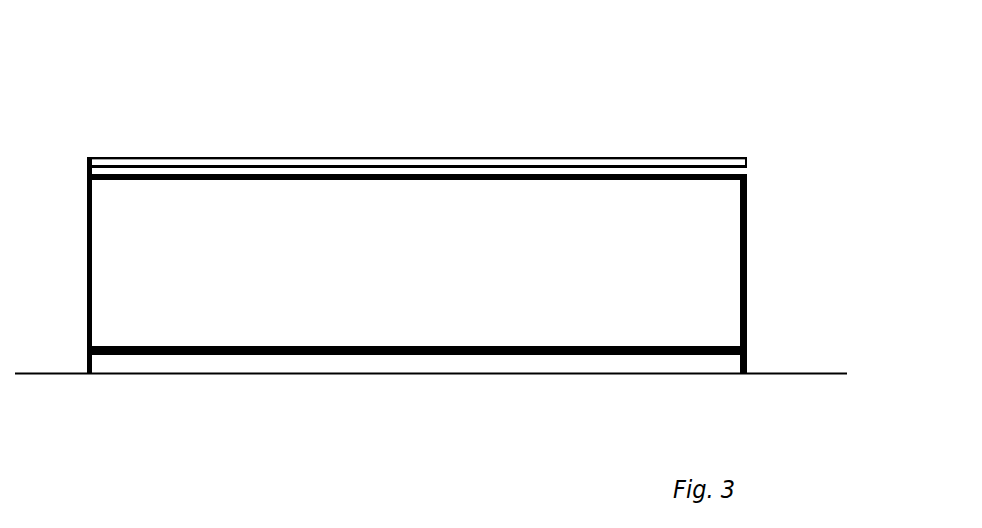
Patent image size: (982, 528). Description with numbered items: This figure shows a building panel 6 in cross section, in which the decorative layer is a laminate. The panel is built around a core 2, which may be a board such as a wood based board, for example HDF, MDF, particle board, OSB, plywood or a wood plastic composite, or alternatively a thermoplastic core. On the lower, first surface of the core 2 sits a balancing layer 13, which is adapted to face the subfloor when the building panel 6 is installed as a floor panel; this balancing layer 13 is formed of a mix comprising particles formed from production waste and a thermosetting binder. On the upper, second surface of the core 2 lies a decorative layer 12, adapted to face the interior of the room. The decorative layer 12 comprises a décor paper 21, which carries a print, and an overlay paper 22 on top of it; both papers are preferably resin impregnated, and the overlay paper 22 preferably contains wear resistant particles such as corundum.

The building panel 6 is at (224, 115).
The core 2 is at (728, 272).
The decorative layer 12 is at (759, 167).
The décor paper 21 is at (572, 168).
The overlay paper 22 is at (700, 159).
The balancing layer 13 is at (747, 358).